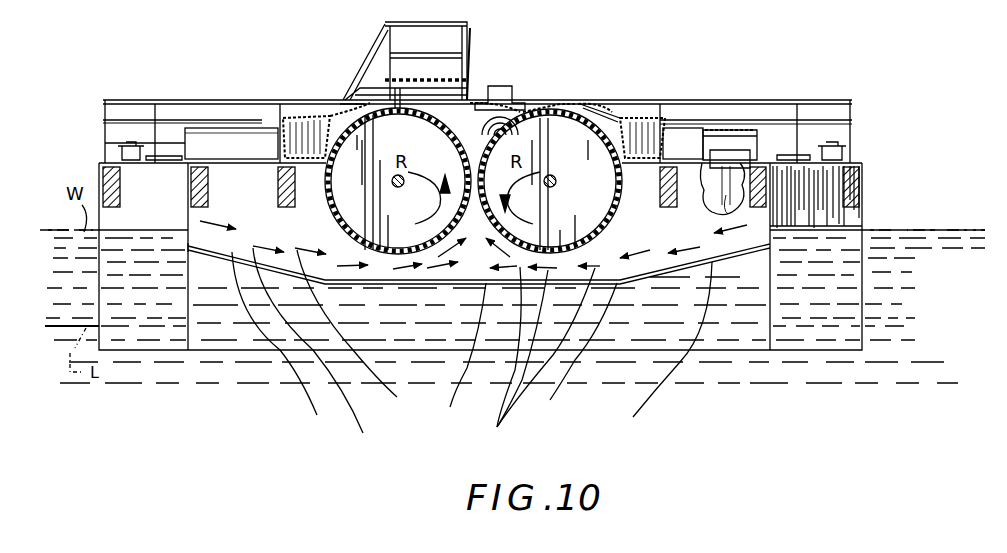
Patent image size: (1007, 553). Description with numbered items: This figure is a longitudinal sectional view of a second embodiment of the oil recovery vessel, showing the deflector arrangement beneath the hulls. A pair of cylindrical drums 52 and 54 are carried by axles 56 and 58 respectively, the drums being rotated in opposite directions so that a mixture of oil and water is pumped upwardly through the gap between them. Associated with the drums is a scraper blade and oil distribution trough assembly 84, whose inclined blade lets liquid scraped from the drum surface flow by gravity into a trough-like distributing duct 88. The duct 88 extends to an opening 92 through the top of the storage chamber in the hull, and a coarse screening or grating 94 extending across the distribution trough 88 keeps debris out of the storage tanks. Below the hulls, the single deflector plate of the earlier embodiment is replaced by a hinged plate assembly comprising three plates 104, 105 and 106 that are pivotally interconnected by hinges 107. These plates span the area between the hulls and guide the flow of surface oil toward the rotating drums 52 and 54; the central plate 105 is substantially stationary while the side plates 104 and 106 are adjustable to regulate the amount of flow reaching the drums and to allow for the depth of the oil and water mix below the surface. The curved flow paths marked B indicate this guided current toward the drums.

The scavenger or scraper blade and oil distribution trough assembly 84 is at (237, 146).
The coarse screening or grating 94 is at (630, 116).
The distributing duct 88 is at (662, 128).
The opening 92 is at (746, 160).
The cylindrical drum 54 is at (388, 118).
The cylindrical drum 52 is at (547, 122).
The axle 58 is at (392, 185).
The axle 56 is at (556, 184).
The plate 104 is at (284, 350).
The plate 105 is at (461, 362).
The plate 106 is at (666, 355).
The hinges 107 is at (457, 338).
The flow boundary B is at (424, 355).